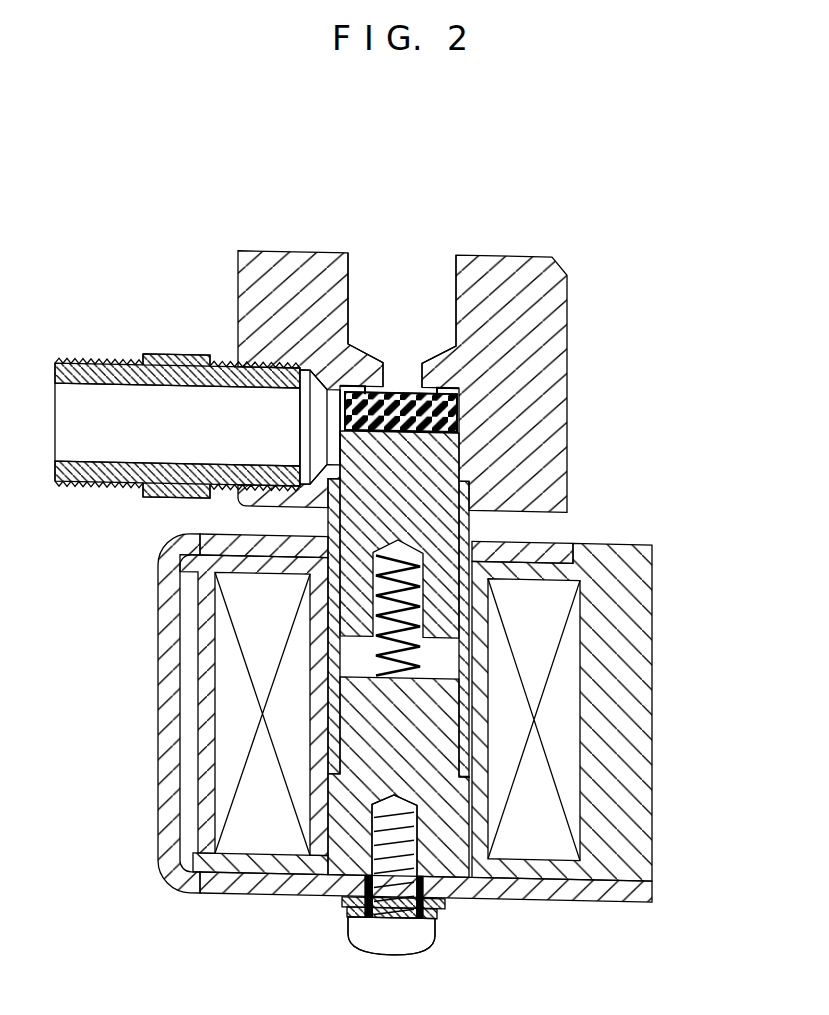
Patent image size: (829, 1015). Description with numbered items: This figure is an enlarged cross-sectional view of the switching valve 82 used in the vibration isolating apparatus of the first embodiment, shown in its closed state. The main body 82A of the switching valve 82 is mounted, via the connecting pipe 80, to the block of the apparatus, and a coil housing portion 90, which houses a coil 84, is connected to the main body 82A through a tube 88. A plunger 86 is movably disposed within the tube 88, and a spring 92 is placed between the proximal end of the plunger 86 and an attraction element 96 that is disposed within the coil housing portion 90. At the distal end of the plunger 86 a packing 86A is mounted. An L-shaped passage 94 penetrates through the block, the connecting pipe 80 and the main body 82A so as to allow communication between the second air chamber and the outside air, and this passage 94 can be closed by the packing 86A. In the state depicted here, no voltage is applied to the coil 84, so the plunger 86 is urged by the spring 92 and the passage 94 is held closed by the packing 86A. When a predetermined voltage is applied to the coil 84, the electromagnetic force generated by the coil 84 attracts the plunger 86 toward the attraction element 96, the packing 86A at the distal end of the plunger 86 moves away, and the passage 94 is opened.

The connecting pipe 80 is at (107, 364).
The switching valve 82 is at (382, 576).
The main body 82A is at (567, 434).
The coil 84 is at (560, 715).
The plunger 86 is at (430, 473).
The packing 86A is at (460, 399).
The tube 88 is at (467, 534).
The coil housing portion 90 is at (635, 828).
The spring 92 is at (430, 646).
The L-shaped passage 94 is at (417, 314).
The attraction element 96 is at (345, 848).